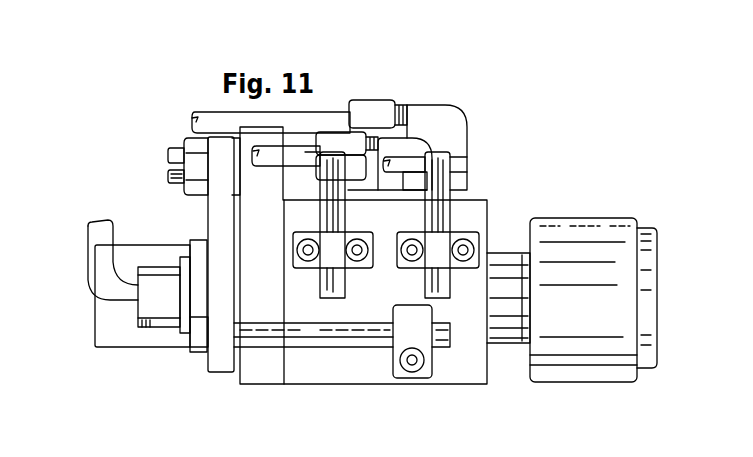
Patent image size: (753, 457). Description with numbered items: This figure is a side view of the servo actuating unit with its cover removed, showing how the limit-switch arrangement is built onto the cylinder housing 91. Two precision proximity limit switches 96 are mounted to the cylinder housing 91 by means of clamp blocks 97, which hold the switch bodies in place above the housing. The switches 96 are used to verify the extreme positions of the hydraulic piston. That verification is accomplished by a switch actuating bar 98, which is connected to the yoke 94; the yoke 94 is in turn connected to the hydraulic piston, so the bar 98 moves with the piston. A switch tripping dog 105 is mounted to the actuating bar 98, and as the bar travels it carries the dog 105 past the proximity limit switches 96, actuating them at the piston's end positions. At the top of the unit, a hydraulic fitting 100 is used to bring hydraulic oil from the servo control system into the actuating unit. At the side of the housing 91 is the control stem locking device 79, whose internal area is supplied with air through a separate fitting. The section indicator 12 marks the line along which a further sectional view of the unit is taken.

The section line 12- 12 is at (28, 440).
The control stem locking device 79 is at (605, 225).
The cylinder housing 91 is at (487, 199).
The yoke 94 is at (214, 372).
The proximity limit switches 96 is at (447, 158).
The clamp blocks 97 is at (477, 231).
The switch actuating bar 98 is at (313, 340).
The hydraulic fitting 100 is at (457, 122).
The switch tripping dog 105 is at (425, 378).